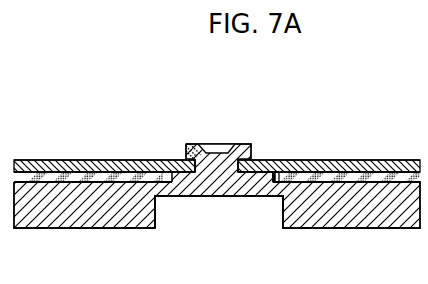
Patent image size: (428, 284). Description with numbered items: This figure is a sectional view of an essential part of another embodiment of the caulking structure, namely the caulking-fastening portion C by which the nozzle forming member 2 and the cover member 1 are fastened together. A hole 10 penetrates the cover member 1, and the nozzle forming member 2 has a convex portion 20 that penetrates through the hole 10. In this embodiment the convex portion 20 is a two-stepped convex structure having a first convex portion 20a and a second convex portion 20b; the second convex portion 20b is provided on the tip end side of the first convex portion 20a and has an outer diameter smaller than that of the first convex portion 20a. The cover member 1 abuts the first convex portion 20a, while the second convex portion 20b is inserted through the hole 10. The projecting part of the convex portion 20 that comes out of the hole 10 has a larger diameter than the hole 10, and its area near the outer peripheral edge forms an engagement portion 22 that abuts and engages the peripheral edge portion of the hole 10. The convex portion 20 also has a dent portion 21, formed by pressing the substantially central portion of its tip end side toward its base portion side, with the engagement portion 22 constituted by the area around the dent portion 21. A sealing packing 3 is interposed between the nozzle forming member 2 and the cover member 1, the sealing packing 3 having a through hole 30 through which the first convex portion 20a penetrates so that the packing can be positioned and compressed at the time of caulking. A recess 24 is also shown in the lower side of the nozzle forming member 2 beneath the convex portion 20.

The cover member 1 is at (339, 160).
The nozzle forming member 2 is at (358, 215).
The sealing packing 3 is at (378, 170).
The hole 10 is at (188, 148).
The convex portion 20 is at (207, 183).
The first convex portion 20a is at (258, 176).
The second convex portion 20b is at (233, 163).
The dent portion 21 is at (213, 149).
The engagement portion 22 is at (244, 145).
The recess in substrate 24 is at (182, 213).
The through hole 30 is at (271, 172).
The caulking-fastening portion C is at (170, 100).